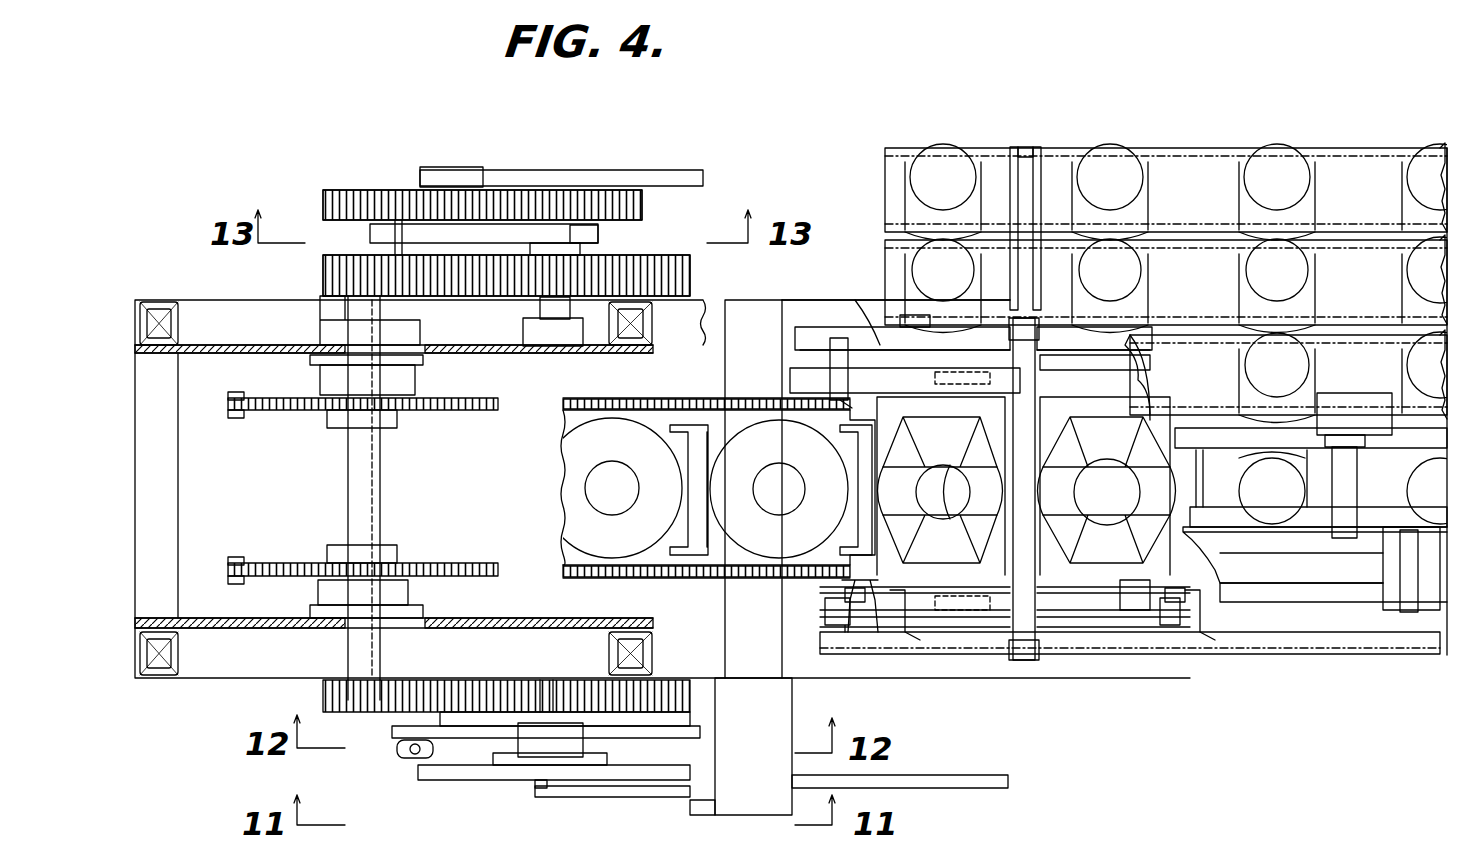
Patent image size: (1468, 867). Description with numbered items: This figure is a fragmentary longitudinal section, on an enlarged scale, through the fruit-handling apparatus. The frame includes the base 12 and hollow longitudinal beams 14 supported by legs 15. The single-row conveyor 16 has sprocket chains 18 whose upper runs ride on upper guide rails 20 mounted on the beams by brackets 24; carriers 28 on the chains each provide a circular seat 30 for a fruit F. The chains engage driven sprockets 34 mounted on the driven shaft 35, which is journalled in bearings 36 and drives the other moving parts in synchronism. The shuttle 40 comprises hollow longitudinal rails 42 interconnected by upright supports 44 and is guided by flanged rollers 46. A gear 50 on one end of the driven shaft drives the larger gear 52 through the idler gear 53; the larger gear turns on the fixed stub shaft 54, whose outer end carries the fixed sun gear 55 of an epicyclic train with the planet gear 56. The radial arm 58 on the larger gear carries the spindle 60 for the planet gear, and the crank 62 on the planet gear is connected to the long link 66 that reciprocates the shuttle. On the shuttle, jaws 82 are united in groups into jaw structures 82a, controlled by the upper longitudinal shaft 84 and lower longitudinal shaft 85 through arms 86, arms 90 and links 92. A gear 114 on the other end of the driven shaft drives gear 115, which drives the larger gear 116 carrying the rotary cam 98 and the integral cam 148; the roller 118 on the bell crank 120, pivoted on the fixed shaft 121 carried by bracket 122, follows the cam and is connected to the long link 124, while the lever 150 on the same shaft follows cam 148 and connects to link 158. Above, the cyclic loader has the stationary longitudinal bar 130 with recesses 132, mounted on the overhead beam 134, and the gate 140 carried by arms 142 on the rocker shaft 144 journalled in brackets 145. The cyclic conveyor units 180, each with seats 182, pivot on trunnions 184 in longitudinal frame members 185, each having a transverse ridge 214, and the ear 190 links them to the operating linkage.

The base 12 is at (232, 338).
The hollow longitudinal beams 14 is at (818, 300).
The legs 15 is at (155, 302).
The single-row conveyor 16 is at (575, 520).
The sprocket chains 18 is at (234, 418).
The upper guide rails 20 is at (790, 410).
The brackets 24 is at (768, 302).
The carriers 28 is at (722, 400).
The circular seat 30 is at (575, 484).
The driven sprockets 34 is at (445, 410).
The driven shaft 35 is at (348, 492).
The bearings 36 is at (415, 382).
The shuttle 40 is at (1395, 655).
The hollow longitudinal rails 42 is at (835, 372).
The upright supports 44 is at (1022, 660).
The flanged rollers 46 is at (985, 660).
The gear 50 is at (325, 272).
The larger gear 52 is at (690, 282).
The idler gear 53 is at (410, 298).
The fixed stub shaft 54 is at (598, 234).
The sun gear 55 is at (642, 210).
The planet gear 56 is at (345, 190).
The radial arm 58 is at (370, 230).
The spindle 60 is at (400, 222).
The crank 62 is at (448, 185).
The long link 66 is at (622, 180).
The jaws 82 is at (880, 430).
The jaw structure 82a is at (882, 300).
The upper longitudinal shaft 84 is at (930, 327).
The lower longitudinal shaft 85 is at (846, 655).
The arms 86 is at (900, 655).
The arms 90 is at (825, 628).
The link 92 is at (845, 596).
The rotary cam 98 is at (458, 780).
The gear 114 is at (323, 692).
The gear 115 is at (418, 688).
The larger gear 116 is at (490, 688).
The roller 118 is at (548, 797).
The bell crank 120 is at (642, 786).
The fixed shaft 121 is at (710, 768).
The bracket 122 is at (712, 821).
The long link 124 is at (962, 788).
The longitudinal bar 130 is at (1192, 428).
The recesses 132 is at (1320, 395).
The overhead beam 134 is at (1378, 392).
The gate 140 is at (1330, 655).
The arms 142 is at (1400, 572).
The rocker shaft 144 is at (1248, 527).
The brackets 145 is at (1350, 476).
The cam 148 is at (632, 715).
The lever 150 is at (392, 732).
The link 158 is at (408, 758).
The conveyor units 180 is at (885, 178).
The seats 182 is at (912, 208).
The trunnions 184 is at (995, 148).
The longitudinal frame members 185 is at (1015, 147).
The ear 190 is at (1025, 190).
The transverse ridge 214 is at (1208, 158).
The film F is at (968, 488).